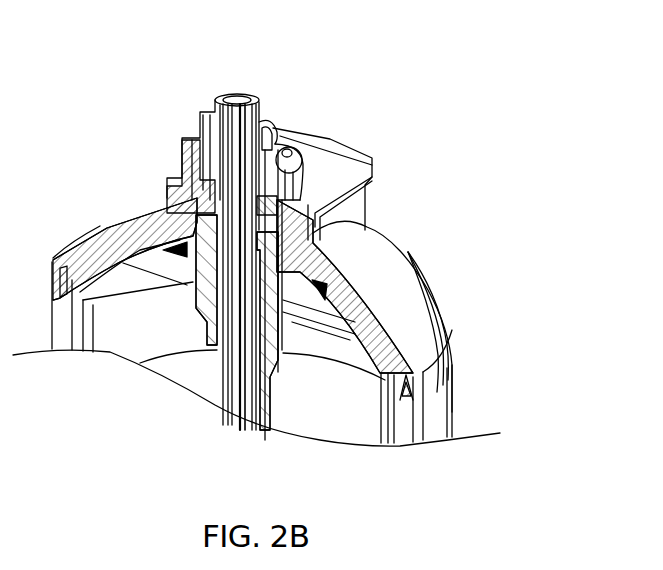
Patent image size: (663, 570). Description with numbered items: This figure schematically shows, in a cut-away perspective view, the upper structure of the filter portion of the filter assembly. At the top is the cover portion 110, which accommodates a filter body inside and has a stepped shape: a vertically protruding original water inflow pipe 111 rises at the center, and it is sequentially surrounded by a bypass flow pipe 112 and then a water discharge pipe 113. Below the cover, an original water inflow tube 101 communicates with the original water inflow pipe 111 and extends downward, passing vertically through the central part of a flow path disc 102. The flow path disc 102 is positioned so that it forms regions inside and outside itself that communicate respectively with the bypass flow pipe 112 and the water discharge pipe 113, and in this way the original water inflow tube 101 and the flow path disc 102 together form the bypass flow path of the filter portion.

The original water inflow tube 101 is at (137, 208).
The flow path disc 102 is at (265, 273).
The cover portion 110 is at (348, 162).
The original water inflow pipe 111 is at (228, 95).
The bypass flow pipe 112 is at (267, 123).
The water discharge pipe 113 is at (287, 143).